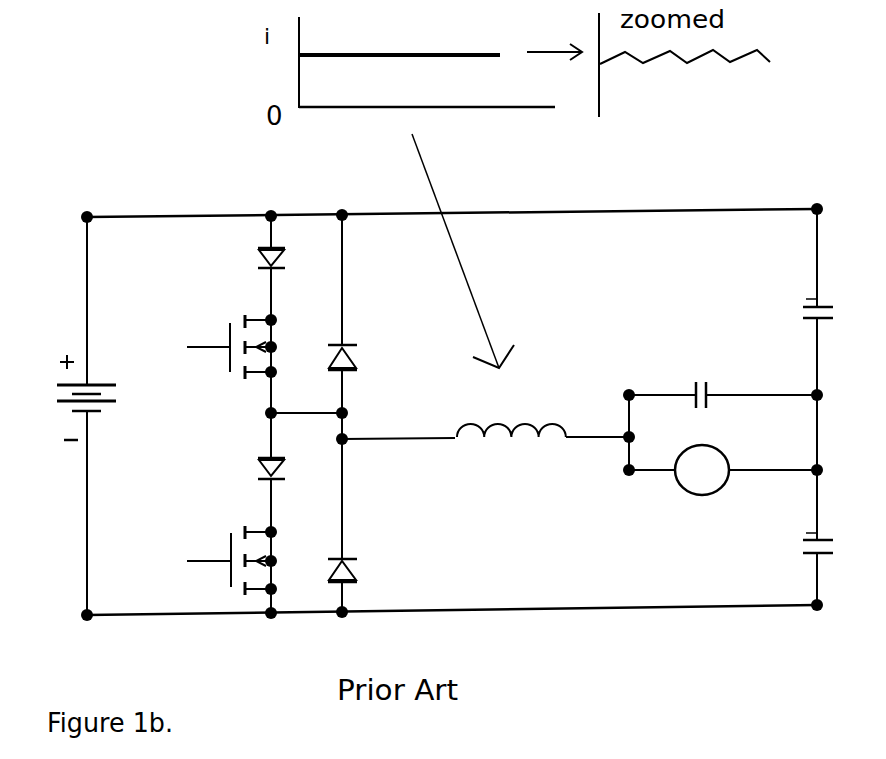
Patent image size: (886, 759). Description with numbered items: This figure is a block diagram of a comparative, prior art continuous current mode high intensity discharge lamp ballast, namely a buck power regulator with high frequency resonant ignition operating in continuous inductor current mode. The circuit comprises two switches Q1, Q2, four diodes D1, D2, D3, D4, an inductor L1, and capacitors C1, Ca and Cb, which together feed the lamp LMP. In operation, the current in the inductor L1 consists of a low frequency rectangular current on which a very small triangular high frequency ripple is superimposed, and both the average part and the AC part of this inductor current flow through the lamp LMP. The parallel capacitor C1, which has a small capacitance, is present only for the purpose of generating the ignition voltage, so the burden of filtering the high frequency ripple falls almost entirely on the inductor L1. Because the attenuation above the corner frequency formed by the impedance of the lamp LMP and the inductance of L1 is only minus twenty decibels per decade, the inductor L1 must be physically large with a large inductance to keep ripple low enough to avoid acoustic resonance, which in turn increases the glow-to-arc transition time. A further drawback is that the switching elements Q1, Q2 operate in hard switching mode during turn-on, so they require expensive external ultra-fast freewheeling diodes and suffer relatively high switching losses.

The diode D3 is at (247, 250).
The switch Q1 is at (227, 339).
The diode D1 is at (363, 355).
The diode D4 is at (247, 461).
The switch Q2 is at (227, 552).
The diode D2 is at (363, 565).
The inductor L1 is at (511, 411).
The parallel capacitor C1 is at (699, 376).
The lamp LMP is at (698, 491).
The capacitor Ca is at (795, 312).
The capacitor Cb is at (796, 550).